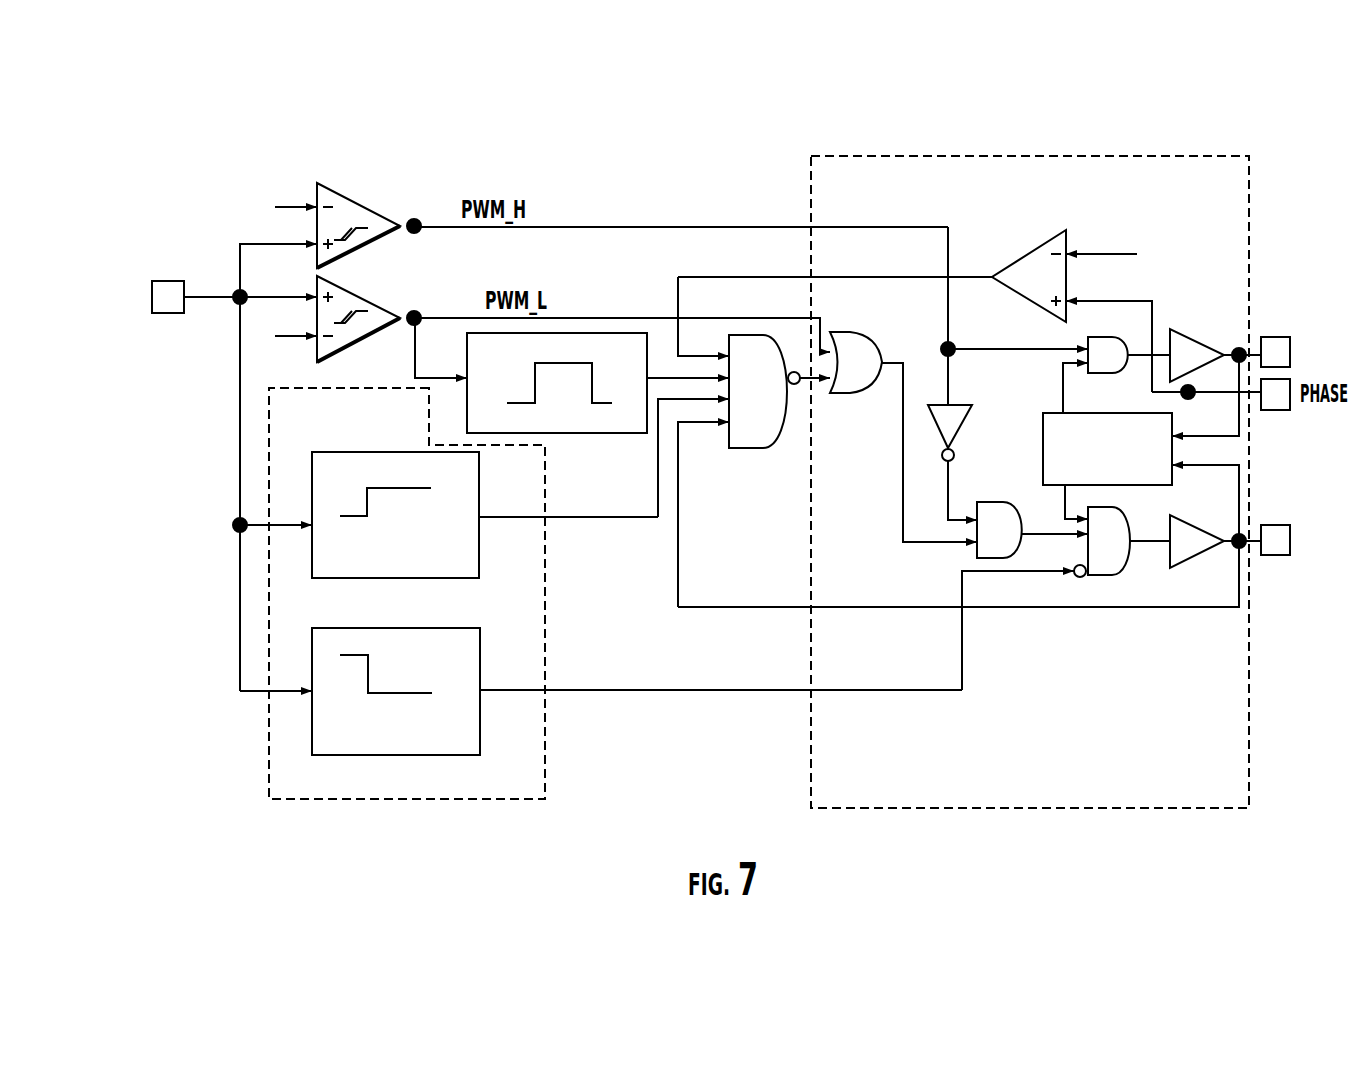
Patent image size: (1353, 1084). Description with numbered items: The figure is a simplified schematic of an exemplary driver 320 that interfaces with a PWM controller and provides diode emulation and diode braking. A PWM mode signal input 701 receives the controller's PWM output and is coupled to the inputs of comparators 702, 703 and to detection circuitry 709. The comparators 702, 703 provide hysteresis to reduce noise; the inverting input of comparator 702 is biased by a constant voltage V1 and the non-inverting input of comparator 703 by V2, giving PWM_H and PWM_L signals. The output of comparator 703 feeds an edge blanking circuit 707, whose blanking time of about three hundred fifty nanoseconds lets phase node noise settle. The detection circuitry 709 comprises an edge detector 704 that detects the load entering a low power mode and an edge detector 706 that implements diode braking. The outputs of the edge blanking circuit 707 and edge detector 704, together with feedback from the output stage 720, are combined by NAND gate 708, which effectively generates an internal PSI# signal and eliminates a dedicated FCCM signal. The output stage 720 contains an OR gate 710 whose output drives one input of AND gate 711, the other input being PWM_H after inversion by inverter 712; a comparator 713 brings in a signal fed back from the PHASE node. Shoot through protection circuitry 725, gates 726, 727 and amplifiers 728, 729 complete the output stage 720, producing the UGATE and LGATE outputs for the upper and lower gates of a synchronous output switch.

The driver 320 is at (572, 833).
The PWM mode signal input 701 is at (162, 280).
The comparator 702 is at (373, 213).
The comparator 703 is at (373, 305).
The edge detector 704 is at (327, 452).
The edge detector 706 is at (482, 660).
The edge blanking circuit 707 is at (592, 333).
The NAND gate 708 is at (750, 450).
The detection circuitry 709 is at (545, 758).
The OR gate 710 is at (867, 332).
The AND gate 711 is at (988, 501).
The inverter 712 is at (960, 405).
The comparator 713 is at (1027, 250).
The output stage 720 is at (1142, 156).
The shoot through protection circuitry 725 is at (1117, 413).
The gate 726 is at (1128, 329).
The AND gate 727 is at (1107, 576).
The amplifier 728 is at (1192, 338).
The amplifier 729 is at (1190, 558).